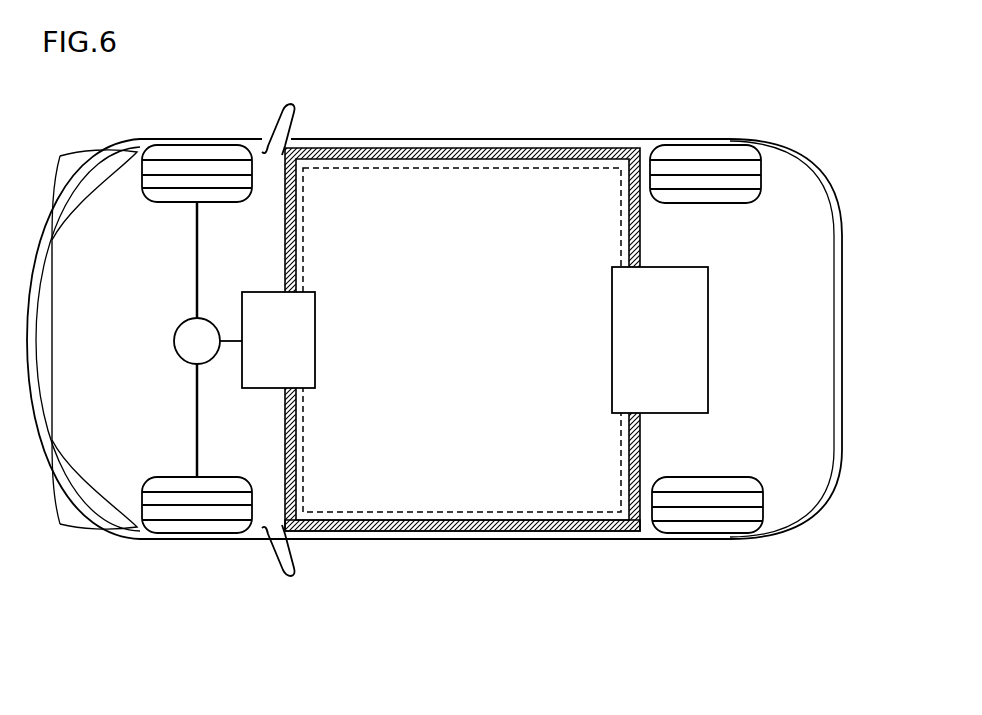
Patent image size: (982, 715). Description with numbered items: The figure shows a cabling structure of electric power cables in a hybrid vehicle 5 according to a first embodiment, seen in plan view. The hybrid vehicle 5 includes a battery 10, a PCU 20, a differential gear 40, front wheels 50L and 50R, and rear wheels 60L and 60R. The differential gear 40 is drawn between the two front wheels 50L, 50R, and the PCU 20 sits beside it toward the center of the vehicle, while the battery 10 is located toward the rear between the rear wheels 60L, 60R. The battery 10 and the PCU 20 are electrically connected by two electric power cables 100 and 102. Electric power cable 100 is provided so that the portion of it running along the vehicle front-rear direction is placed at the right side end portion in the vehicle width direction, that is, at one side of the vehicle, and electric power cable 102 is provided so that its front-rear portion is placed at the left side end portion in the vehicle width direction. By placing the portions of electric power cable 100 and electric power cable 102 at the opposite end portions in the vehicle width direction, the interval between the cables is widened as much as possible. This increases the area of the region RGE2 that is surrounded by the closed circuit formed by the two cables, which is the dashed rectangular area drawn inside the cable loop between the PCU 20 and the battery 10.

The hybrid vehicle 5 is at (298, 69).
The battery 10 is at (708, 350).
The PCU (Power Control Unit) 20 is at (258, 292).
The differential gear (DG) 40 is at (174, 341).
The front wheel 50R is at (178, 145).
The front wheel 50L is at (180, 533).
The rear wheel 60R is at (720, 145).
The rear wheel 60L is at (720, 533).
The electric power cable 100 is at (413, 148).
The electric power cable 102 is at (413, 531).
The region RGE2 is at (572, 492).